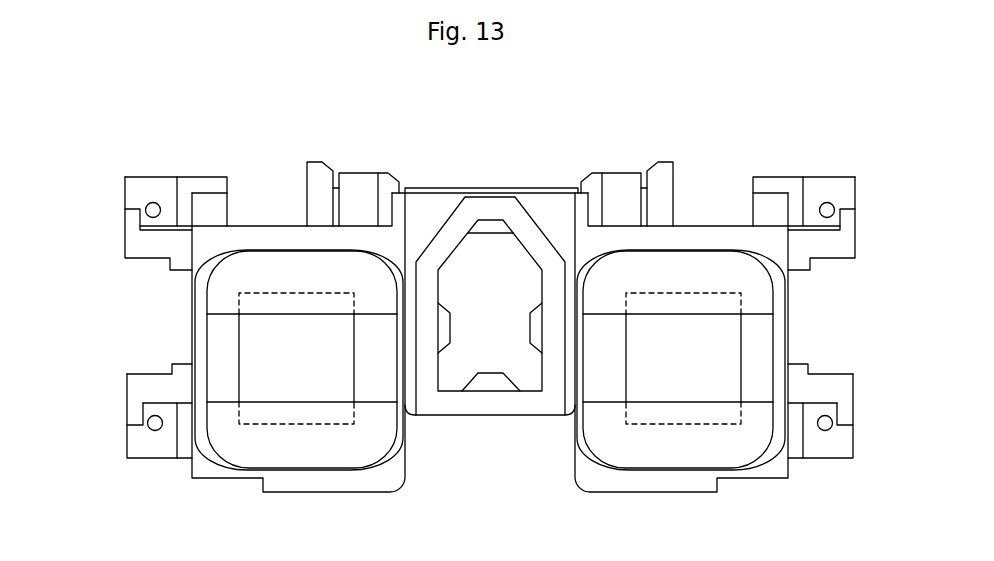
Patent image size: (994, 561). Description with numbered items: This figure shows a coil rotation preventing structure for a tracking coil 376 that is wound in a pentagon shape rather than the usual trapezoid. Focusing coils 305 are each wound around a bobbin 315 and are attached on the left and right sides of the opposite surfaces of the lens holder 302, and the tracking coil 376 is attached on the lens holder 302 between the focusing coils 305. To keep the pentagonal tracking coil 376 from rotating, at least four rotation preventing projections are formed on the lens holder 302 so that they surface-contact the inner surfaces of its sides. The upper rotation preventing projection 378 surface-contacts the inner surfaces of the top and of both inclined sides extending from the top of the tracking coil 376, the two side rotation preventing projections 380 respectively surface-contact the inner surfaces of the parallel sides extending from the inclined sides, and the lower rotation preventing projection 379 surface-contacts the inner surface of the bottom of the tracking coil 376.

The lens holder 302 is at (358, 188).
The focusing coil 305 is at (222, 335).
The bobbin 315 is at (223, 288).
The tracking coil 376 is at (525, 213).
The upper rotation preventing projection 378 is at (488, 230).
The lower rotation preventing projection 379 is at (491, 388).
The side rotation preventing projection 380 is at (445, 340).